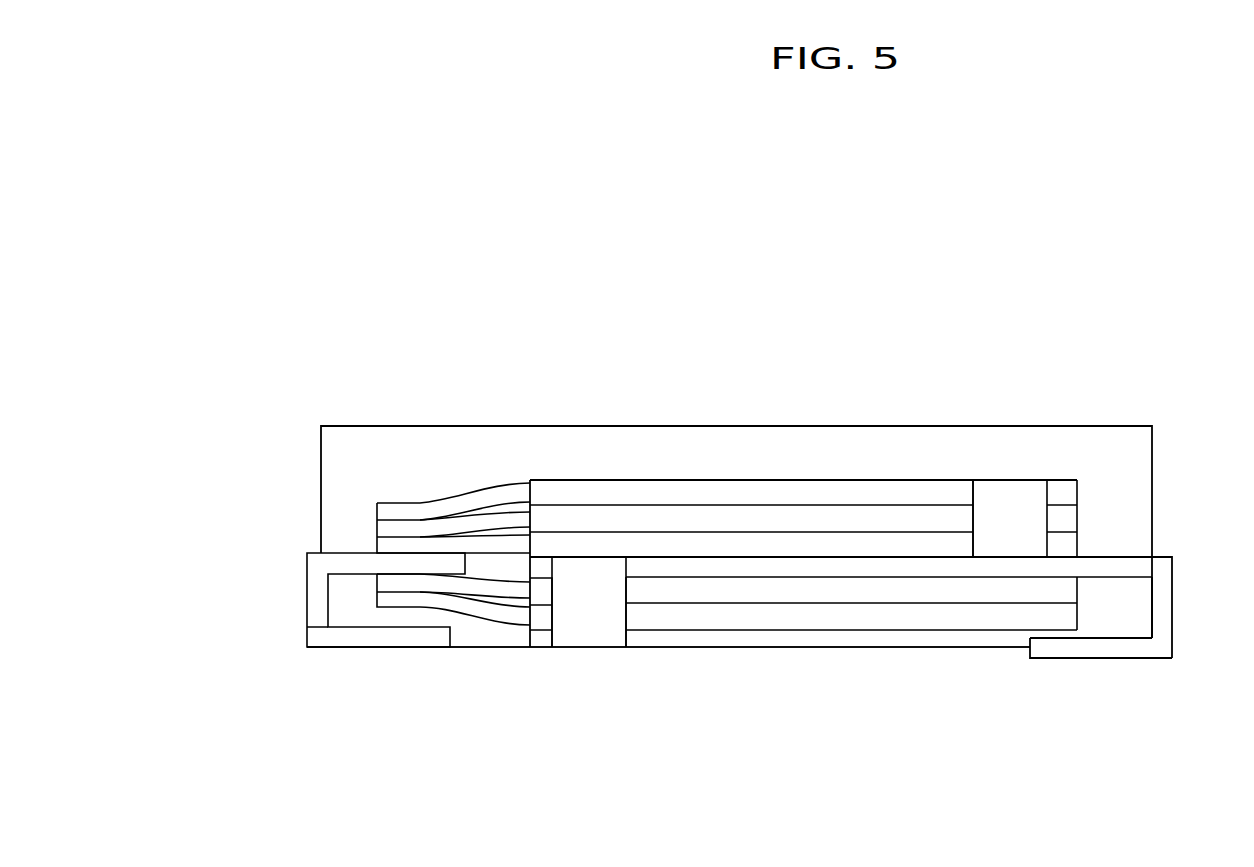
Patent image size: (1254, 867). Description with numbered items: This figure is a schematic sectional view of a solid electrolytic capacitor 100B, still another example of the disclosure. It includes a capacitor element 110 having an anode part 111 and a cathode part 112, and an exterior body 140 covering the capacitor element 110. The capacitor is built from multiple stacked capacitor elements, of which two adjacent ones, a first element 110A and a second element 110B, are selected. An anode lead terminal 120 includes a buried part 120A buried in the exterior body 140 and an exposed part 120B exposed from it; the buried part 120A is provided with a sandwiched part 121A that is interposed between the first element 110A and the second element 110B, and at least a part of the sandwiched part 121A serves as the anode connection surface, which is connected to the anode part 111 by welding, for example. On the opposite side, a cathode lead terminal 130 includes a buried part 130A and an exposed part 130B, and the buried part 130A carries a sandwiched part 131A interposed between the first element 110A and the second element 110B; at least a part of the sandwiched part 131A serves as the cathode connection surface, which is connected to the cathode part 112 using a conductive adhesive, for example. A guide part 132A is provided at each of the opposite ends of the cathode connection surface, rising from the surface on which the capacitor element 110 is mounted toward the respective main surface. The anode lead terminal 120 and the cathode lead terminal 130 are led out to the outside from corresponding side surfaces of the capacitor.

The solid electrolytic capacitor 100B is at (902, 194).
The capacitor element 110 is at (764, 521).
The anode part 111 is at (487, 493).
The cathode part 112 is at (841, 542).
The first element 110A is at (842, 540).
The second element 110B is at (890, 588).
The anode lead terminal 120 is at (286, 591).
The buried part 120A is at (357, 560).
The exposed part 120B is at (333, 648).
The sandwiched part 121A is at (445, 562).
The cathode lead terminal 130 is at (839, 672).
The buried part 130A is at (1110, 567).
The exposed part 130B is at (1120, 648).
The sandwiched part 131A is at (937, 567).
The guide part 132A is at (1028, 490).
The exterior body 140 is at (1115, 447).